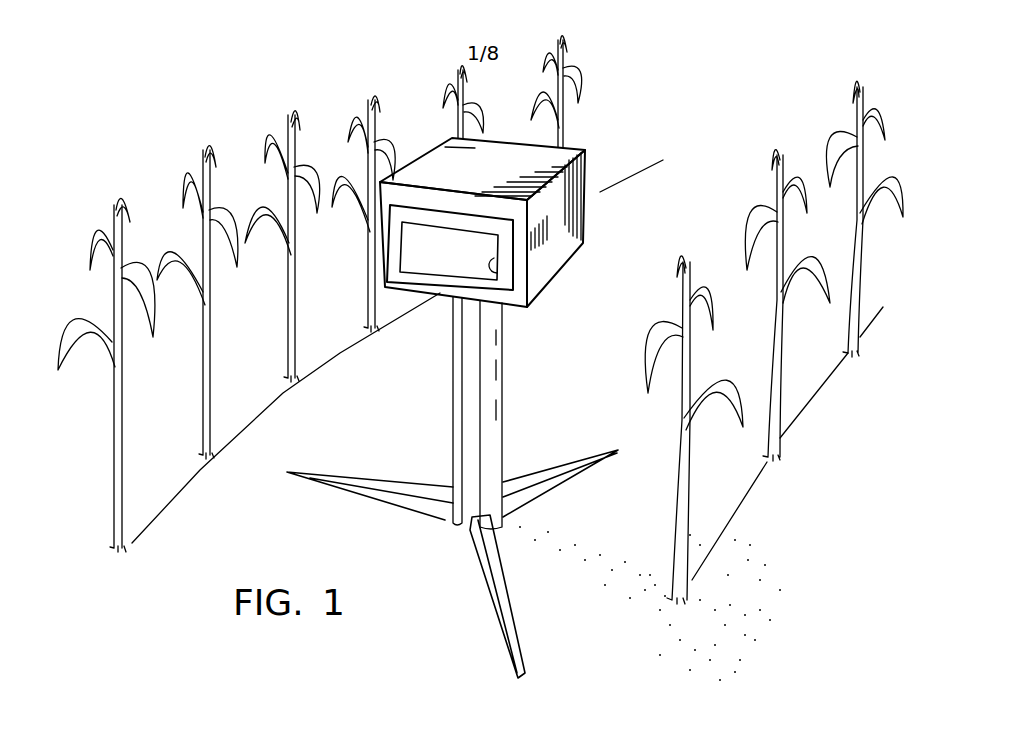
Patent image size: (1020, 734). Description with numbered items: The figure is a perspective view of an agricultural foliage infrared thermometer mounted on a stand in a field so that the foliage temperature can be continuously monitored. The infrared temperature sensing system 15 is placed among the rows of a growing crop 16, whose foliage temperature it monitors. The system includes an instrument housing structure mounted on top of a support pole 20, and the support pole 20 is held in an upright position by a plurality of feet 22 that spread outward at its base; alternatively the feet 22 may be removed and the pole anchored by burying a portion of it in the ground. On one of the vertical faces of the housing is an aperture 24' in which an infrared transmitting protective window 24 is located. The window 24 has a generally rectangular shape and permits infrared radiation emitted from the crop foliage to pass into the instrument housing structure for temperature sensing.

The infrared temperature sensing system 15 is at (620, 155).
The growing crop 16 is at (158, 112).
The support pole 20 is at (503, 397).
The feet 22 is at (388, 478).
The infrared transmitting protective window 24 is at (448, 277).
The aperture 24' is at (536, 289).